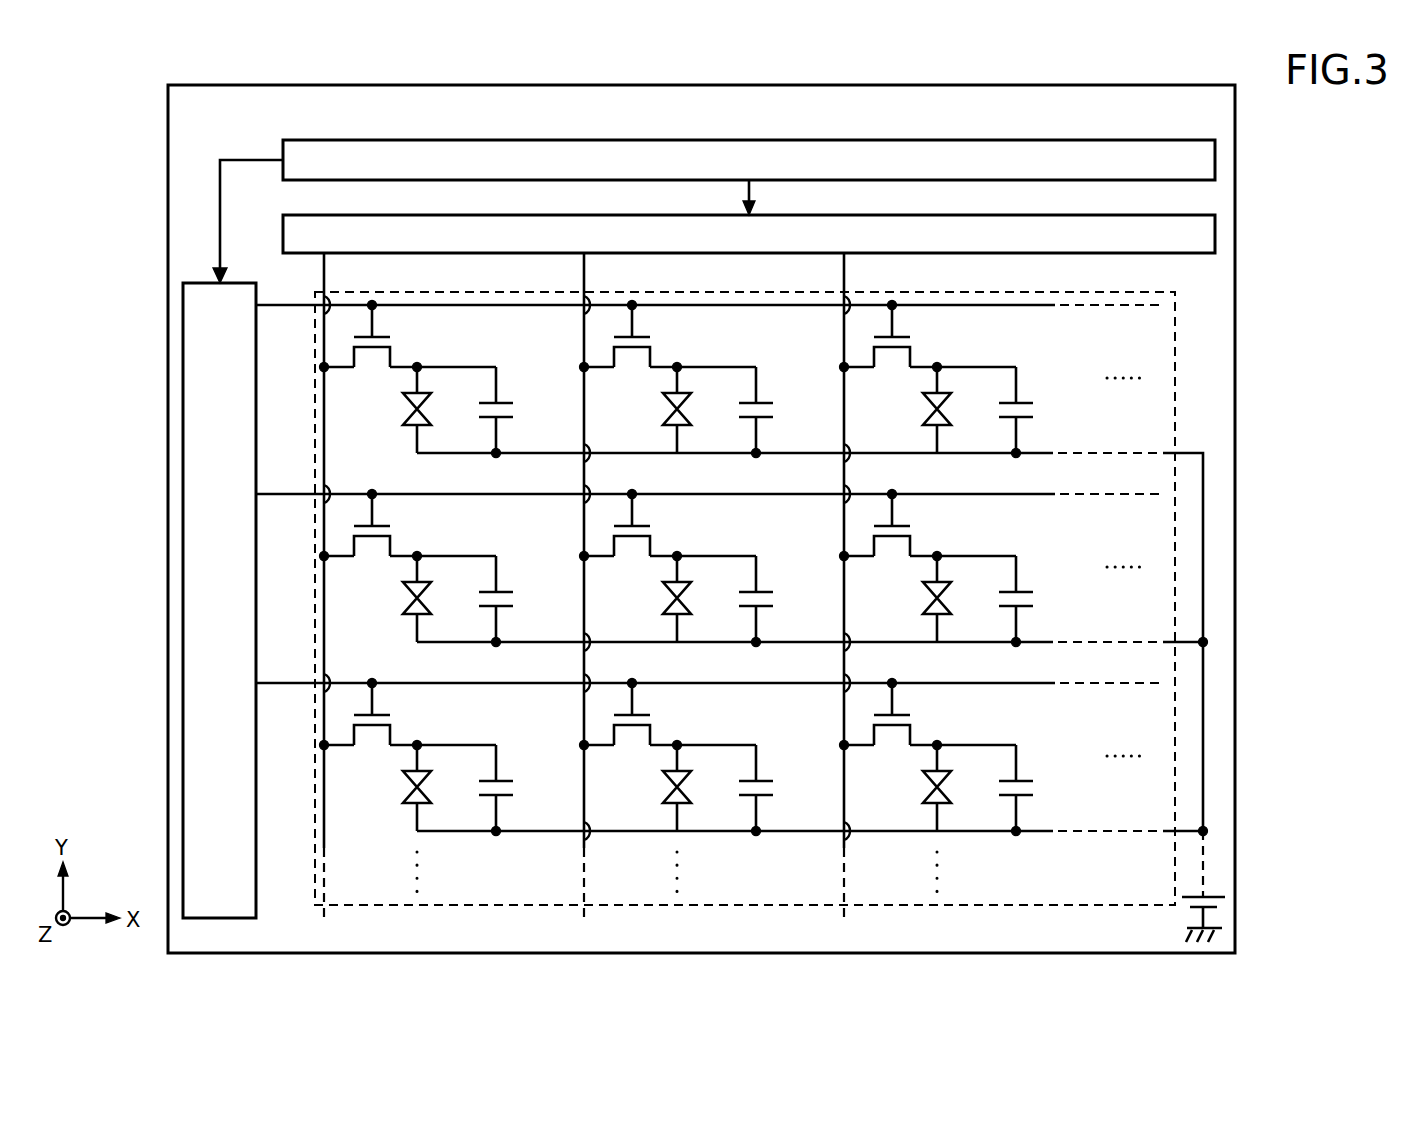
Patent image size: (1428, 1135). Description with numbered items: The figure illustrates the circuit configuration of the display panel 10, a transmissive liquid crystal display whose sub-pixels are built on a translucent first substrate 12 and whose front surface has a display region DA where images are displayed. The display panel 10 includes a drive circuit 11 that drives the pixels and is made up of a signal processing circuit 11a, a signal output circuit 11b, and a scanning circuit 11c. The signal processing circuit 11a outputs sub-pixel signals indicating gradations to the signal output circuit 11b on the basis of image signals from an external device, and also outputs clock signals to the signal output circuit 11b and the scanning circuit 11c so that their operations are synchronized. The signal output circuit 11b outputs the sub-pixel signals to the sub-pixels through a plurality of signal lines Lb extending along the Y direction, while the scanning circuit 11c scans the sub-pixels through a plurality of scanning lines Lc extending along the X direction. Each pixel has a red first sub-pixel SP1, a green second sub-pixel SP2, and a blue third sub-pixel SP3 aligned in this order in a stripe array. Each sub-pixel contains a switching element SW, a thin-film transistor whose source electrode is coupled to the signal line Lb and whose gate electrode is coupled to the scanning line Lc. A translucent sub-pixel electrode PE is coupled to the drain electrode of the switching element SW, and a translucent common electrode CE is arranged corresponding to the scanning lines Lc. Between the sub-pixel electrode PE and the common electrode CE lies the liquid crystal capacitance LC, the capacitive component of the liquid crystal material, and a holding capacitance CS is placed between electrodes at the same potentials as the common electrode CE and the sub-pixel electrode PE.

The display panel 10 is at (84, 88).
The first substrate 12 is at (168, 113).
The drive circuit 11 is at (729, 529).
The signal processing circuit 11a is at (1215, 157).
The signal output circuit 11b is at (1215, 232).
The scanning circuit 11c is at (183, 316).
The display region DA is at (1177, 345).
The signal line Lb is at (867, 272).
The scanning line Lc is at (284, 680).
The first sub-pixel SP1 is at (414, 603).
The second sub-pixel SP2 is at (674, 603).
The third sub-pixel SP3 is at (994, 603).
The switching element SW is at (633, 547).
The sub-pixel electrode PE is at (716, 533).
The liquid crystal capacitance LC is at (698, 600).
The holding capacitance CS is at (783, 617).
The common electrode CE is at (1054, 852).